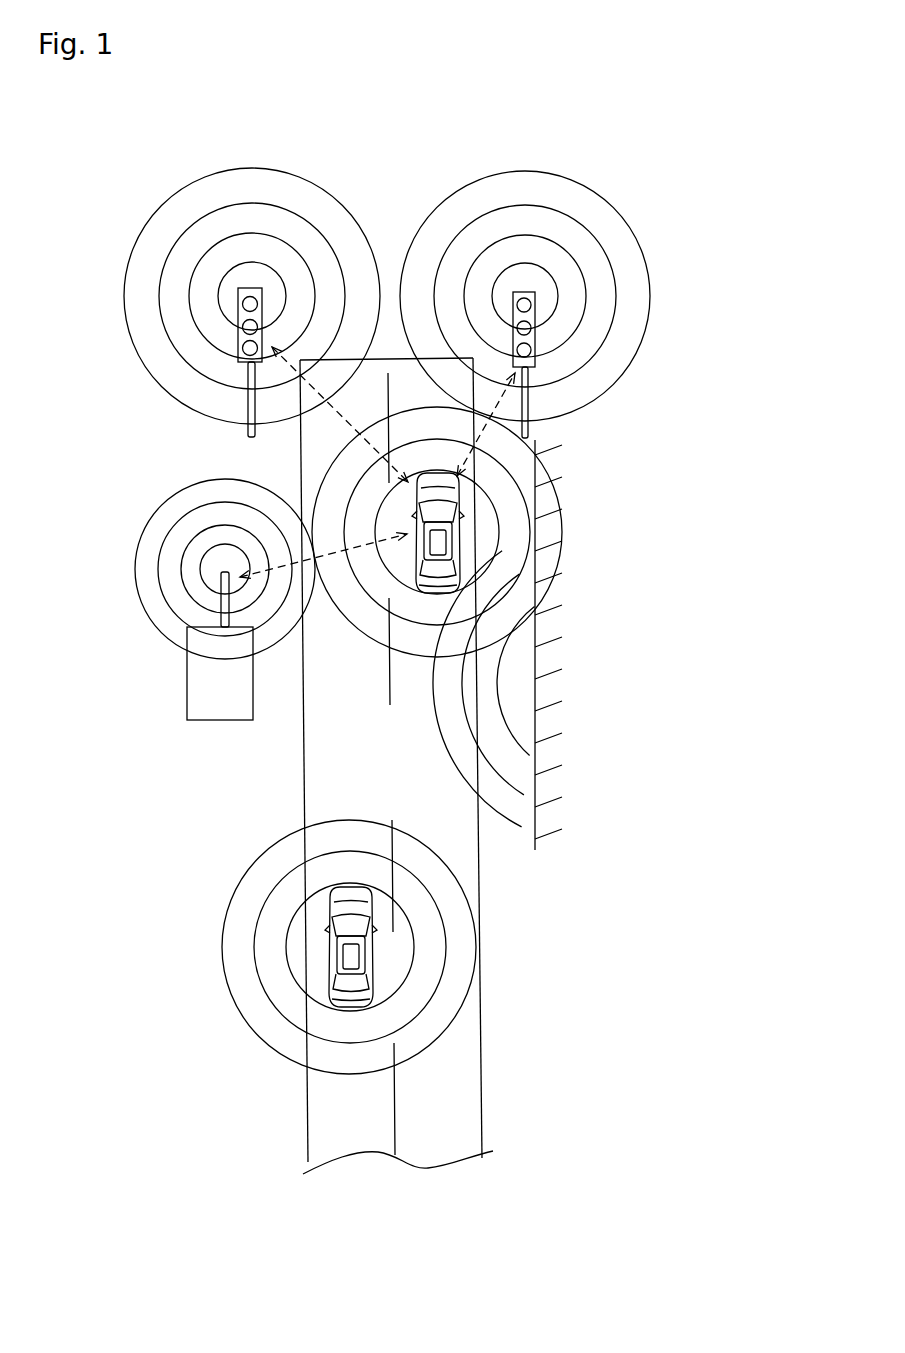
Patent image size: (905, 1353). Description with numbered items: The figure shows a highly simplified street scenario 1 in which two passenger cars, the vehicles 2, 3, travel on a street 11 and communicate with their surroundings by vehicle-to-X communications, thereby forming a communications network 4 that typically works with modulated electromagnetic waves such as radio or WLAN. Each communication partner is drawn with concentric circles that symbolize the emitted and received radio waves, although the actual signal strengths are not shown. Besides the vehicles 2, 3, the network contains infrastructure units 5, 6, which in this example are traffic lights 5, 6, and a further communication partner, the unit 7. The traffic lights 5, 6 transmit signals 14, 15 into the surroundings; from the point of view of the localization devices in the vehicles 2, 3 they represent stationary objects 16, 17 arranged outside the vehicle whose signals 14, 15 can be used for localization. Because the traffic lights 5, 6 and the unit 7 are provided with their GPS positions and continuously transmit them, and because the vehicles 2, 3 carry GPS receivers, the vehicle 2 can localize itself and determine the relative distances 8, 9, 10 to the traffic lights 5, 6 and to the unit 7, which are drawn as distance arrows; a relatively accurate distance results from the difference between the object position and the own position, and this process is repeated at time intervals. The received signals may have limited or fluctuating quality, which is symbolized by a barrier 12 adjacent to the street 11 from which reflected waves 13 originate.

The street scenario 1 is at (658, 161).
The vehicle 2 is at (433, 597).
The vehicle 3 is at (343, 1008).
The communications network 4 is at (142, 438).
The infrastructure unit 5 is at (220, 350).
The infrastructure unit 6 is at (490, 350).
The unit 7 is at (182, 686).
The relative distance 8 is at (340, 414).
The relative distance 9 is at (478, 424).
The relative distance 10 is at (323, 552).
The street 11 is at (508, 1132).
The barrier 12 is at (537, 752).
The reflected waves 13 is at (484, 689).
The signal 14 is at (252, 296).
The signal 15 is at (525, 296).
The stationary object 16 is at (228, 298).
The stationary object 17 is at (507, 293).